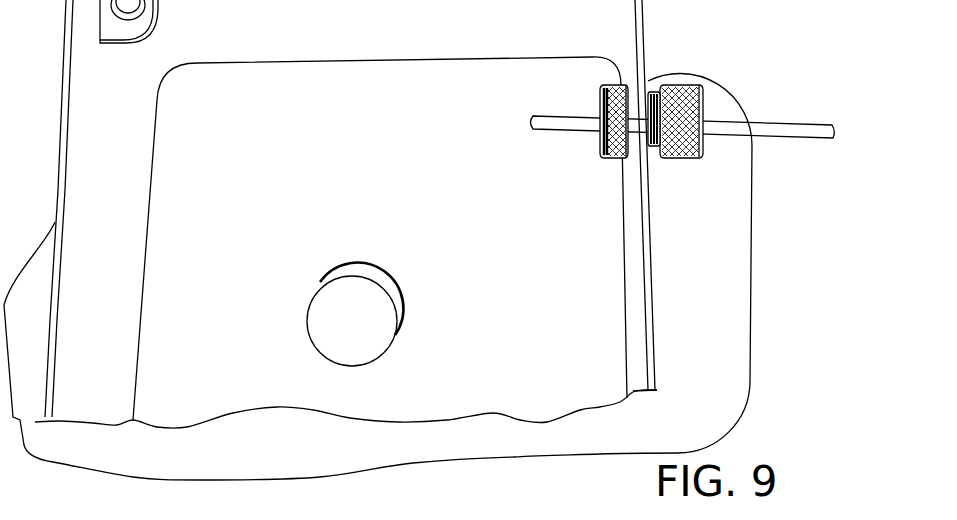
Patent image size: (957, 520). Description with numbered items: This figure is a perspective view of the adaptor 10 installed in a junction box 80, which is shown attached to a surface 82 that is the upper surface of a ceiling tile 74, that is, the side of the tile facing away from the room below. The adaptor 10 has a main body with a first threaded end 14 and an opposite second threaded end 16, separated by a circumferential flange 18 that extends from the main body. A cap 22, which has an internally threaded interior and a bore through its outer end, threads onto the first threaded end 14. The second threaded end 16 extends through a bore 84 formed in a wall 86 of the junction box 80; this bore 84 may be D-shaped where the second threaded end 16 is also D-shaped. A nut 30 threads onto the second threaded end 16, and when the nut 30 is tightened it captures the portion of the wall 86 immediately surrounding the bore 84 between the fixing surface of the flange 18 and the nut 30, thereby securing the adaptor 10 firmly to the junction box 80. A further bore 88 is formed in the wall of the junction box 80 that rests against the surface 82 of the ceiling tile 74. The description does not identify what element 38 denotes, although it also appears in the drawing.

The adaptor 10 is at (713, 70).
The first threaded end 14 is at (651, 157).
The second threaded end 16 is at (601, 100).
The circumferential flange 18 is at (650, 83).
The cap 22 is at (697, 150).
The nut 30 is at (617, 160).
The cable 38 is at (806, 117).
The ceiling tile 74 is at (710, 308).
The junction box 80 is at (643, 15).
The surface 82 is at (717, 395).
The bore 84 is at (632, 158).
The wall 86 is at (650, 238).
The bore 88 is at (320, 287).